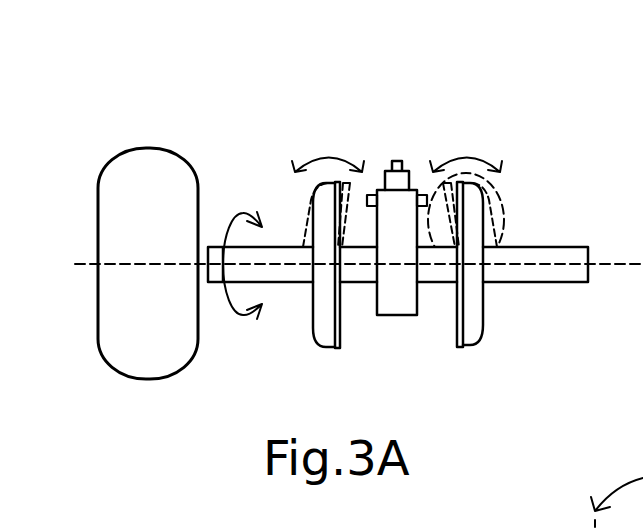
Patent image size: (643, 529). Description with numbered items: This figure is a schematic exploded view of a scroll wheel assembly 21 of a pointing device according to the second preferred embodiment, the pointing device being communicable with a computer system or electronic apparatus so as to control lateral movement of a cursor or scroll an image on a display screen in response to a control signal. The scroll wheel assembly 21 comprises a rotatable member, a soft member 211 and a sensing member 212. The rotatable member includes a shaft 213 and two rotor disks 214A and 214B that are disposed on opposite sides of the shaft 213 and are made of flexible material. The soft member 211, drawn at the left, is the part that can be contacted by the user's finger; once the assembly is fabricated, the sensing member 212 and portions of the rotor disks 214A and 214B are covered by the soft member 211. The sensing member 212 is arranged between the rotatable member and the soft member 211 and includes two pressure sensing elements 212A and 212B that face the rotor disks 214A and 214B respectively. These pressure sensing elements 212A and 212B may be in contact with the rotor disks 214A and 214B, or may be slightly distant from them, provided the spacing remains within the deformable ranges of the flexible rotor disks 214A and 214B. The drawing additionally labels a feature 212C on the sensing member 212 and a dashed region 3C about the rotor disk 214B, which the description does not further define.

The scroll wheel assembly 21 is at (204, 85).
The soft member 211 is at (130, 183).
The sensing member 212 is at (393, 197).
The pressure sensing element 212A is at (378, 189).
The pressure sensing element 212B is at (418, 189).
The top connector 212C is at (397, 158).
The shaft 213 is at (548, 256).
The rotor disk 214A is at (322, 317).
The rotor disk 214B is at (473, 315).
The swing region 3C is at (503, 207).